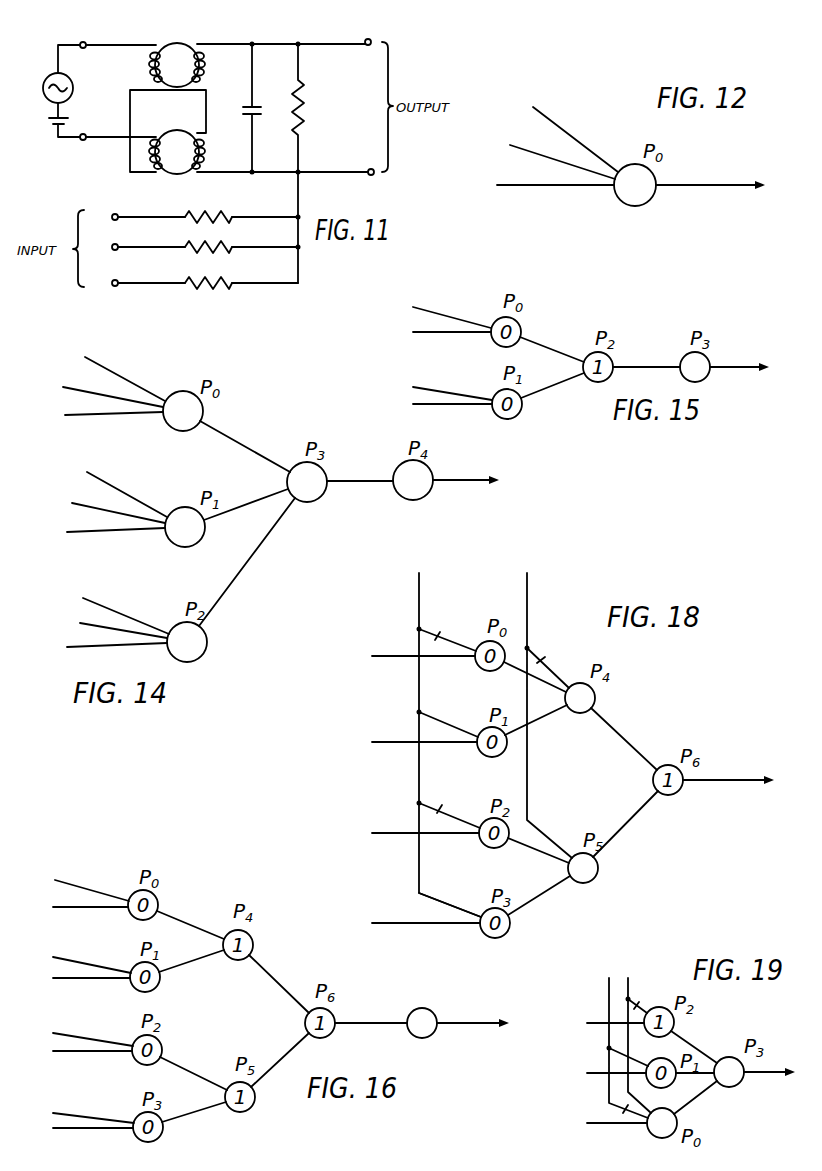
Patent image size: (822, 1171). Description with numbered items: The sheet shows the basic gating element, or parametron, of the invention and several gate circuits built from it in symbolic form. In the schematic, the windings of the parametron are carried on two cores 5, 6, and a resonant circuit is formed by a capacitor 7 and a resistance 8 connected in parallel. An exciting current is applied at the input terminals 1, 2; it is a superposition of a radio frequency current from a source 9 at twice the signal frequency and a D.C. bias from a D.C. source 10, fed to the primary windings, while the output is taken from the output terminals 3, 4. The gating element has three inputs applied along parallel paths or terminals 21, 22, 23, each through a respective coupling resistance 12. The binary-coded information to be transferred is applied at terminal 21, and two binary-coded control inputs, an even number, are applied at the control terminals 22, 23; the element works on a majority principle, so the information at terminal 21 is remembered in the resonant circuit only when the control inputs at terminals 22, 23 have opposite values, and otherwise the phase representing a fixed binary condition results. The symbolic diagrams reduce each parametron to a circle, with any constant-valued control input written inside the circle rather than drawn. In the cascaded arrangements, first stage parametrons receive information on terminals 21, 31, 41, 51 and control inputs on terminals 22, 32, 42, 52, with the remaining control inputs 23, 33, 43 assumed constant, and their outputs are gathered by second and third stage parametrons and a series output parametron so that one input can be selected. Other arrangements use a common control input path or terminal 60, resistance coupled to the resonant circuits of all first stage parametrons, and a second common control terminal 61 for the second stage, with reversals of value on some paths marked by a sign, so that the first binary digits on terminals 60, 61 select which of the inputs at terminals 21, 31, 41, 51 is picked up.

In FIG. 11, the input terminal 1 is at (86, 43).
In FIG. 11, the input terminal 2 is at (86, 141).
In FIG. 11, the output terminal 3 is at (370, 176).
In FIG. 11, the output terminal 4 is at (371, 38).
In FIG. 11, the core 5 is at (184, 40).
In FIG. 11, the core 6 is at (187, 132).
In FIG. 11, the capacitor 7 is at (248, 108).
In FIG. 11, the resistance 8 is at (311, 100).
In FIG. 11, the source 9 is at (43, 88).
In FIG. 11, the D.C. source 10 is at (50, 120).
In FIG. 11, the coupling resistance 12 is at (227, 209).
In FIG. 11, the input terminal 21 is at (112, 219).
In FIG. 12, the input terminal 21 is at (501, 185).
In FIG. 15, the input terminal 21 is at (410, 332).
In FIG. 14, the input terminal 21 is at (71, 406).
In FIG. 18, the input terminal 21 is at (370, 656).
In FIG. 16, the input terminal 21 is at (53, 909).
In FIG. 19, the input terminal 21 is at (587, 1123).
In FIG. 11, the control input terminal 22 is at (112, 249).
In FIG. 12, the control input terminal 22 is at (511, 146).
In FIG. 15, the control input terminal 22 is at (426, 298).
In FIG. 14, the control input terminal 22 is at (78, 378).
In FIG. 18, the control input terminal 22 is at (447, 628).
In FIG. 16, the control input terminal 22 is at (58, 870).
In FIG. 11, the control input terminal 23 is at (112, 285).
In FIG. 12, the control input terminal 23 is at (534, 110).
In FIG. 14, the control input terminal 23 is at (104, 350).
In FIG. 15, the input information terminal 31 is at (408, 403).
In FIG. 14, the input information terminal 31 is at (73, 524).
In FIG. 18, the input information terminal 31 is at (370, 742).
In FIG. 16, the input information terminal 31 is at (53, 978).
In FIG. 19, the input information terminal 31 is at (587, 1073).
In FIG. 15, the control input terminal 32 is at (409, 386).
In FIG. 14, the control input terminal 32 is at (86, 495).
In FIG. 18, the control input terminal 32 is at (448, 712).
In FIG. 16, the control input terminal 32 is at (53, 962).
In FIG. 14, the control input terminal 33 is at (112, 463).
In FIG. 14, the input information terminal 41 is at (69, 640).
In FIG. 18, the input information terminal 41 is at (369, 833).
In FIG. 16, the input information terminal 41 is at (53, 1051).
In FIG. 19, the input information terminal 41 is at (587, 1023).
In FIG. 14, the control input terminal 42 is at (76, 617).
In FIG. 18, the control input terminal 42 is at (449, 804).
In FIG. 16, the control input terminal 42 is at (53, 1032).
In FIG. 14, the control input terminal 43 is at (85, 588).
In FIG. 18, the input information terminal 51 is at (369, 923).
In FIG. 16, the input information terminal 51 is at (53, 1129).
In FIG. 18, the control input terminal 52 is at (450, 894).
In FIG. 16, the control input terminal 52 is at (54, 1112).
In FIG. 18, the common control input terminal 60 is at (422, 590).
In FIG. 19, the common control input terminal 60 is at (609, 978).
In FIG. 18, the common control input terminal 61 is at (530, 588).
In FIG. 19, the common control input terminal 61 is at (638, 972).